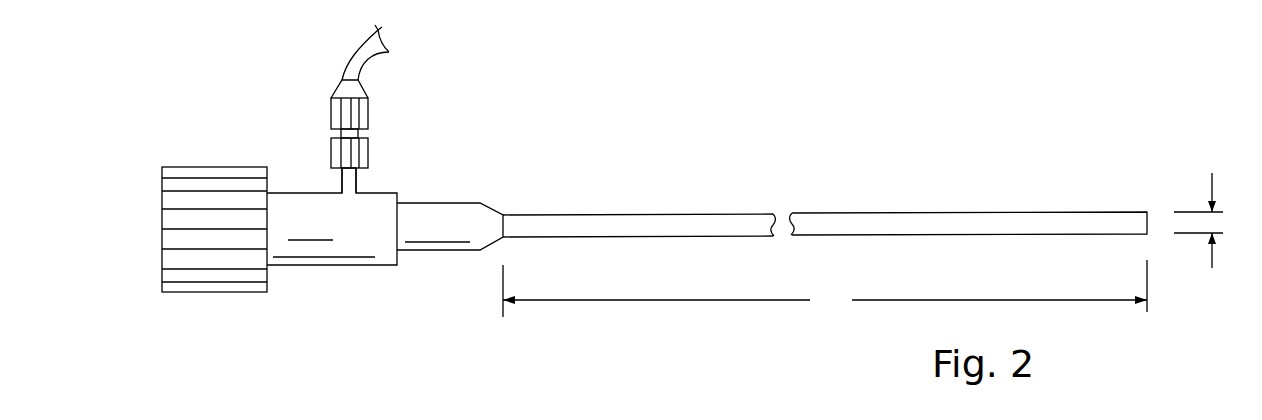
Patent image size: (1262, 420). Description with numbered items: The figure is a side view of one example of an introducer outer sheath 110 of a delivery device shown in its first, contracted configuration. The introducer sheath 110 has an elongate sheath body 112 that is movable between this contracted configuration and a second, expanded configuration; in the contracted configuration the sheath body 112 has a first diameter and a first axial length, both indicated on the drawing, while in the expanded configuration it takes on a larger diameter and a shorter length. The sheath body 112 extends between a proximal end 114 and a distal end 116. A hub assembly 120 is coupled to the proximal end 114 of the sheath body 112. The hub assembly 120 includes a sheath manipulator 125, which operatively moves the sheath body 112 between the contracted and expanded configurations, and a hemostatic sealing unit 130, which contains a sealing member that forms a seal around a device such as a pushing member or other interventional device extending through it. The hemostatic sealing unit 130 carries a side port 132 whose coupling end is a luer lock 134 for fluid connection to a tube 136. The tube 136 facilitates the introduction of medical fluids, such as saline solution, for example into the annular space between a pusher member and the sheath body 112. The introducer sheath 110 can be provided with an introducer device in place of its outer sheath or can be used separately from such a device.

The introducer outer sheath 110 is at (739, 111).
The sheath body 112 is at (874, 224).
The proximal end 114 is at (500, 193).
The distal end 116 is at (1149, 211).
The hub assembly 120 is at (336, 297).
The sheath manipulator 125 is at (435, 228).
The hemostatic sealing unit 130 is at (305, 212).
The side port 132 is at (350, 178).
The luer lock 134 is at (368, 110).
The tube 136 is at (352, 52).